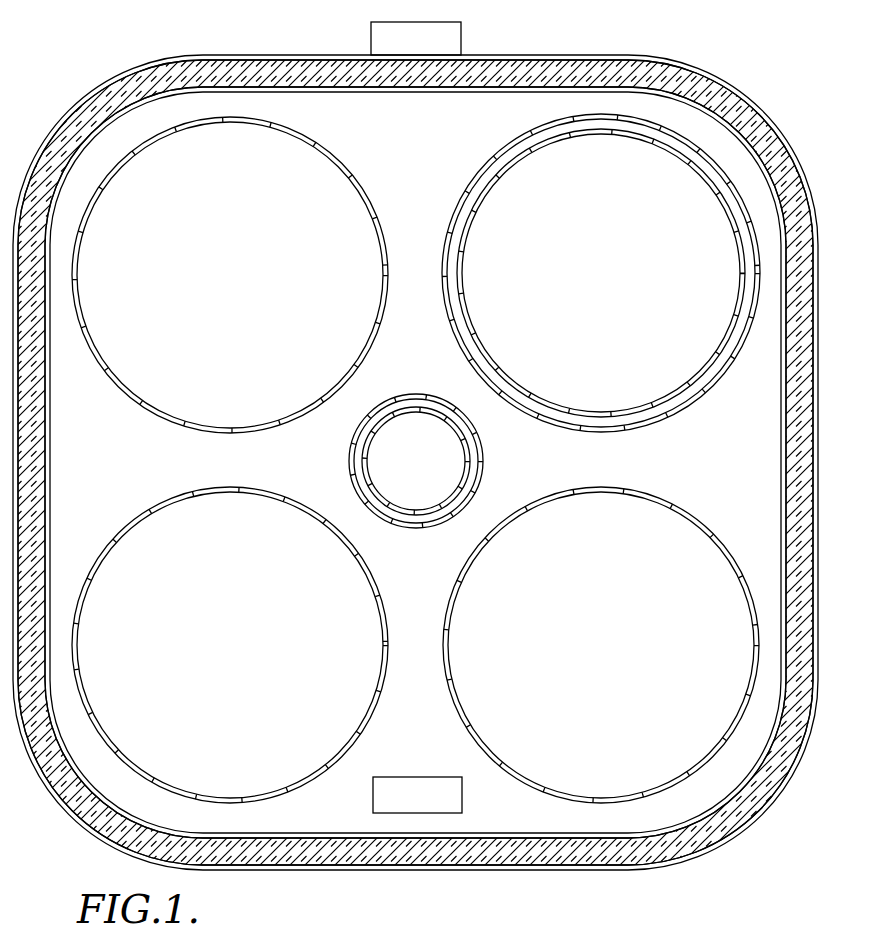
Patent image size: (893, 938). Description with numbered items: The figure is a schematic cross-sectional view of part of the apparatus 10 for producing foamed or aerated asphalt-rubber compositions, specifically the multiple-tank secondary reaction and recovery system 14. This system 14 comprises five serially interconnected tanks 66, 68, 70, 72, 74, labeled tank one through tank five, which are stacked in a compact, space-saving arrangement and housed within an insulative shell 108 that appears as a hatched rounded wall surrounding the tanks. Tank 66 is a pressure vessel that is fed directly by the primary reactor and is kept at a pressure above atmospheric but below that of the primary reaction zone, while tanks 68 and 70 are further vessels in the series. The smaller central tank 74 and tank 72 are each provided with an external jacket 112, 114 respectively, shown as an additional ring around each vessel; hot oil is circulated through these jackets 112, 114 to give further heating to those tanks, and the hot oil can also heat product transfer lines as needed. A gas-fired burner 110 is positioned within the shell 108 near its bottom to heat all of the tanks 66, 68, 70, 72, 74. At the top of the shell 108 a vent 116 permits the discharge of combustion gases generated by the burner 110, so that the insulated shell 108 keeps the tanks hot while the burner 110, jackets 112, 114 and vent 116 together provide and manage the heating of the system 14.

The apparatus 10 is at (718, 66).
The multiple-tank secondary reaction and recovery system 14 is at (426, 185).
The tank 66 is at (668, 503).
The tank 68 is at (152, 507).
The tank 70 is at (243, 433).
The tank 72 is at (516, 412).
The tank 74 is at (382, 397).
The insulative shell 108 is at (390, 845).
The gas-fired burner 110 is at (405, 787).
The external jacket 112 is at (742, 352).
The external jacket 114 is at (448, 522).
The vent 116 is at (372, 35).